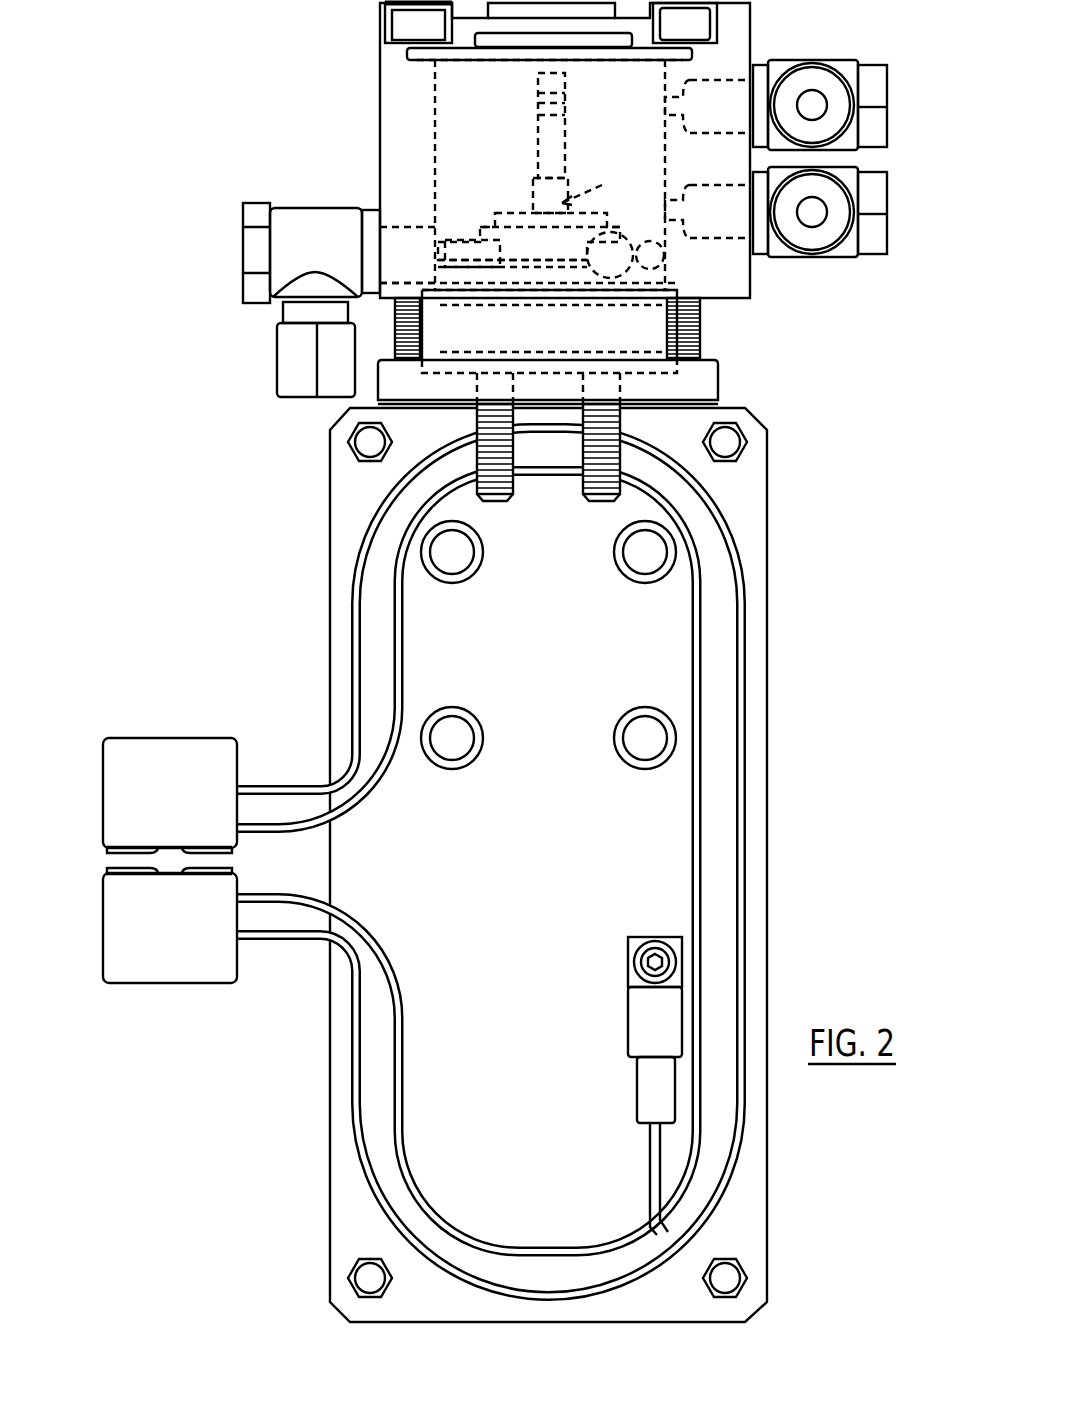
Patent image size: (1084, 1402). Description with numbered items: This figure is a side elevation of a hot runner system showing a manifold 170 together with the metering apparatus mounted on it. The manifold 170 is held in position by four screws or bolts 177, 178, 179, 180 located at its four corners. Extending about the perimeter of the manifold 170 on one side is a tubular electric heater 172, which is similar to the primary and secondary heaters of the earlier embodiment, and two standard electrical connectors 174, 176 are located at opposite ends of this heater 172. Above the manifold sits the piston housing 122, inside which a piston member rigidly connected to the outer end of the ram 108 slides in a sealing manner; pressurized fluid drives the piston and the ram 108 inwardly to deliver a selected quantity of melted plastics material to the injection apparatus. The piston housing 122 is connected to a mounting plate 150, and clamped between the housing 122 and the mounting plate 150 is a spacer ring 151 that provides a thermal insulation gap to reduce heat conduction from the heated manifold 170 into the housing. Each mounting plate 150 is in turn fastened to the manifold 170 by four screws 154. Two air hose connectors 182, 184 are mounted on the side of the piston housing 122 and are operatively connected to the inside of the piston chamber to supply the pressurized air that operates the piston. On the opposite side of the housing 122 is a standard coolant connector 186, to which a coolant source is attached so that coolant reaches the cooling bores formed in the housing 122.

The ram 108 is at (551, 175).
The piston housing 122 is at (396, 160).
The mounting plate 150 is at (722, 390).
The spacer ring 151 is at (630, 325).
The screws 154 is at (622, 418).
The manifold 170 is at (340, 651).
The tubular electric heater 172 is at (363, 727).
The electrical connector 174 is at (195, 737).
The electrical connector 176 is at (130, 985).
The screw or bolt 177 is at (365, 446).
The screw or bolt 178 is at (735, 445).
The screw or bolt 179 is at (732, 1280).
The screw or bolt 180 is at (366, 1277).
The air hose connector 182 is at (780, 68).
The air hose connector 184 is at (777, 248).
The coolant connector 186 is at (312, 220).